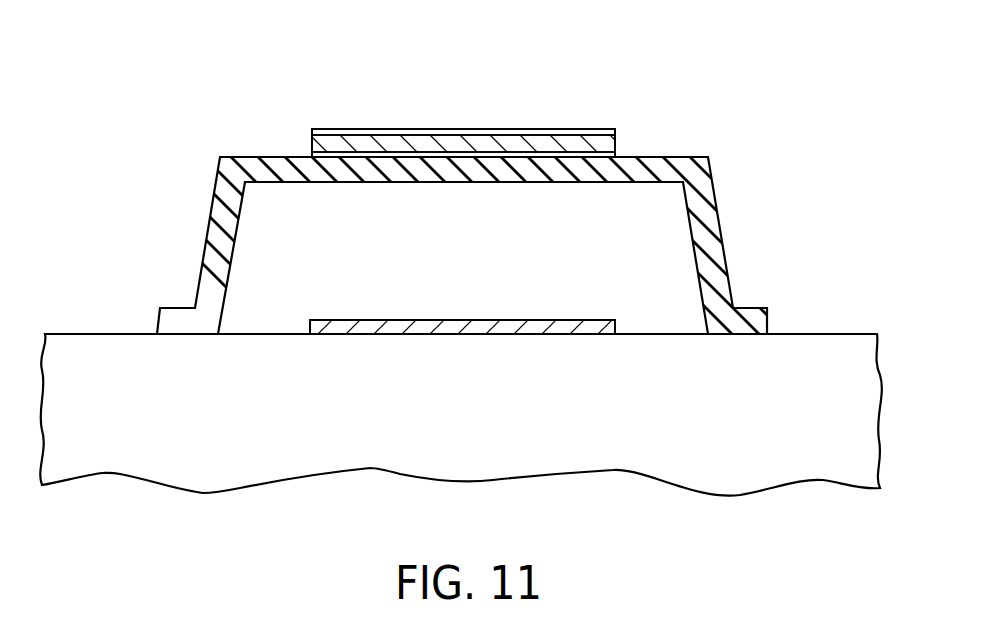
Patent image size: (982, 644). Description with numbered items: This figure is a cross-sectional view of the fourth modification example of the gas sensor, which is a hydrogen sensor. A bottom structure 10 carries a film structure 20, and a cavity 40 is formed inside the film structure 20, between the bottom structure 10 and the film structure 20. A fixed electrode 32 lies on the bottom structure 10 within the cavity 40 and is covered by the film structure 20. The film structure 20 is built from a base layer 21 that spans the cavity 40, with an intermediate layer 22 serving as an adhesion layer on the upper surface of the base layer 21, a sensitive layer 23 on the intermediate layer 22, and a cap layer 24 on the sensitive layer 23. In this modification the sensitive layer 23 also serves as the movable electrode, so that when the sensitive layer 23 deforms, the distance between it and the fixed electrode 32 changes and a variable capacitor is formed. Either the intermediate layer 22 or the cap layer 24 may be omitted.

The bottom structure 10 is at (210, 472).
The film structure 20 is at (578, 106).
The base layer 21 is at (713, 251).
The intermediate layer 22 is at (553, 154).
The sensitive layer 23 is at (471, 135).
The cap layer 24 is at (428, 129).
The fixed electrode 32 is at (395, 321).
The cavity 40 is at (299, 214).